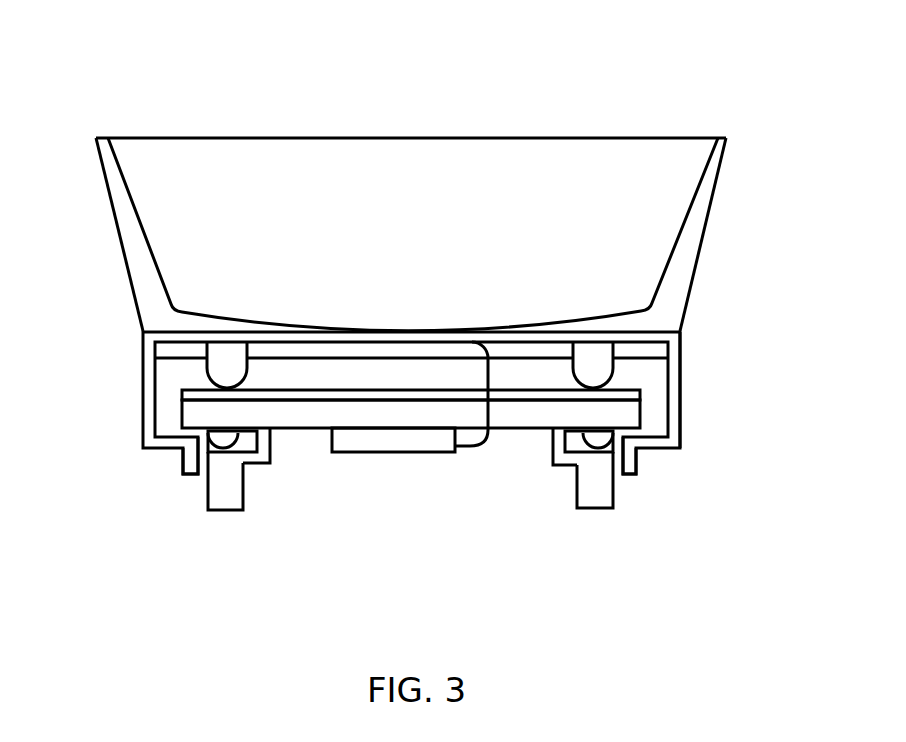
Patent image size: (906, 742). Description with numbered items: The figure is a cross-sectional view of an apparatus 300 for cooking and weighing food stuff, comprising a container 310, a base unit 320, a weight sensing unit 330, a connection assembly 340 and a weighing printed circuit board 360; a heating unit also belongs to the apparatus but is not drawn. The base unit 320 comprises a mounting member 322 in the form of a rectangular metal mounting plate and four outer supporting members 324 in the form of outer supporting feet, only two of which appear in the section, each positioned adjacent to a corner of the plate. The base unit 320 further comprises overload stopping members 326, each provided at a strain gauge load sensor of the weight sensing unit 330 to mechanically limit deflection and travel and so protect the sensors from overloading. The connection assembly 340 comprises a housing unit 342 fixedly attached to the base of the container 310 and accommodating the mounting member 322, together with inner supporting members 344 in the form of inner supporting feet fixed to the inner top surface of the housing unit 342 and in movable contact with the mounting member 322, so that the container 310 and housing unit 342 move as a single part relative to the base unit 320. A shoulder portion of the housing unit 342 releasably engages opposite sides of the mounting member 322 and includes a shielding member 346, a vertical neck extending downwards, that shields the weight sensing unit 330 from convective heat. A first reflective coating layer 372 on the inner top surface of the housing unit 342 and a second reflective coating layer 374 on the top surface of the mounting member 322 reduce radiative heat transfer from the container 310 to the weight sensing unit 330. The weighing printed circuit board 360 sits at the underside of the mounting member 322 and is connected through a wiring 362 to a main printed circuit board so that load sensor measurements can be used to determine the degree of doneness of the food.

The apparatus 300 is at (718, 88).
The container 310 is at (137, 243).
The base unit 320 is at (285, 460).
The mounting member 322 is at (303, 415).
The outer supporting members 324 is at (207, 483).
The overload stopping members 326 is at (223, 448).
The weight sensing unit 330 is at (262, 457).
The connection assembly 340 is at (720, 330).
The housing unit 342 is at (682, 370).
The inner supporting members 344 is at (207, 368).
The shielding member 346 is at (190, 458).
The weighing printed circuit board 360 is at (402, 452).
The wiring 362 is at (482, 446).
The first reflective coating layer 372 is at (167, 348).
The second reflective coating layer 374 is at (183, 393).